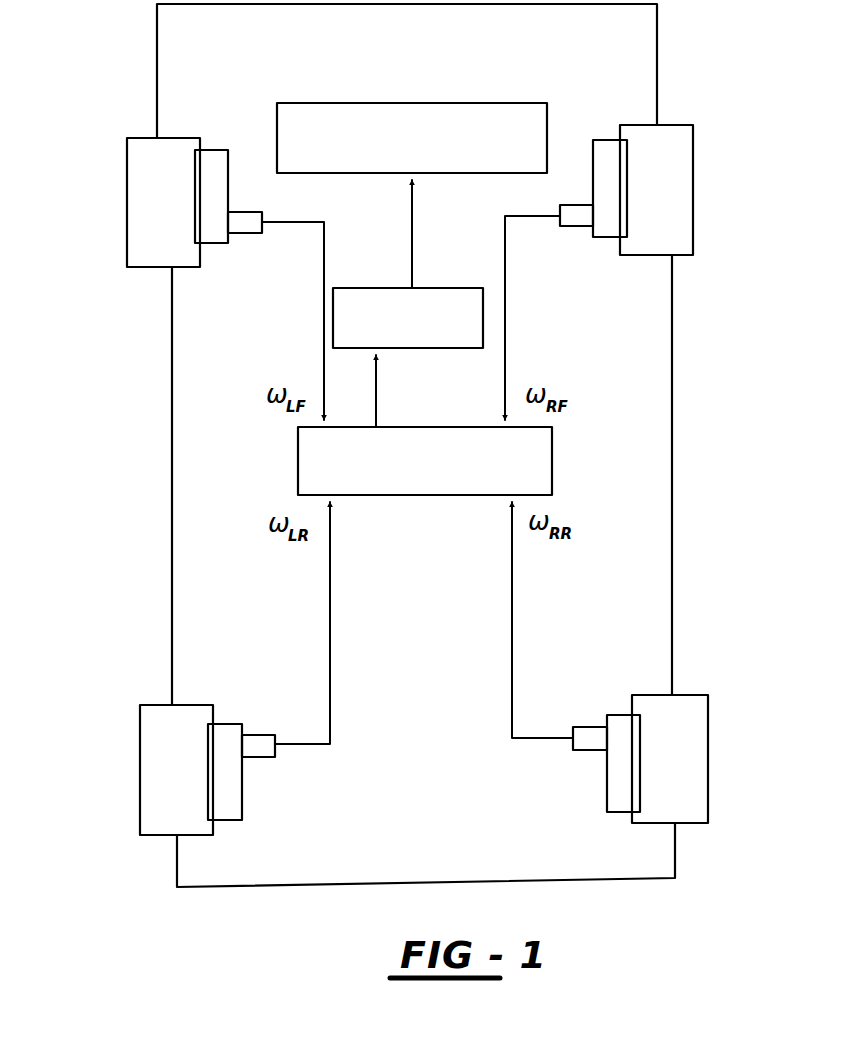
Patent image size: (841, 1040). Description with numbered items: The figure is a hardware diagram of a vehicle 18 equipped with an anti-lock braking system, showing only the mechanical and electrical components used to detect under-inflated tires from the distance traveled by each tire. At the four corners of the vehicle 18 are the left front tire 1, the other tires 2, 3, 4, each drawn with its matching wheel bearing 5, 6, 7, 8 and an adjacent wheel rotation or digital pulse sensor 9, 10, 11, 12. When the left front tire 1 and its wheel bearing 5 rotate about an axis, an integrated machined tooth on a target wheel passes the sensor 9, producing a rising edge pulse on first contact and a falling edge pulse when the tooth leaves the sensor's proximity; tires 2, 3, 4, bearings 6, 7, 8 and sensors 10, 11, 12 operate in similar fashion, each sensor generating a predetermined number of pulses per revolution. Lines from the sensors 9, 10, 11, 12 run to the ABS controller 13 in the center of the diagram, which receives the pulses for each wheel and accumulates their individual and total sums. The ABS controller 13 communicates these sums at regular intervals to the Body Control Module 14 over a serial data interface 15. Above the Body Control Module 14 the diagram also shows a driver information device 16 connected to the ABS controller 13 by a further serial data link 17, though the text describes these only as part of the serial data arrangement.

The left front tire 1 is at (138, 148).
The tire 2 is at (672, 135).
The tire 3 is at (140, 818).
The tire 4 is at (695, 798).
The wheel bearing 5 is at (216, 162).
The wheel bearing 6 is at (610, 140).
The wheel bearing 7 is at (228, 730).
The wheel bearing 8 is at (620, 722).
The wheel rotation sensor 9 is at (246, 228).
The wheel rotation sensor 10 is at (575, 216).
The wheel rotation sensor 11 is at (262, 745).
The wheel rotation sensor 12 is at (587, 742).
The ABS controller 13 is at (440, 487).
The Body Control Module 14 is at (373, 305).
The serial data interface 15 is at (376, 397).
The driver information device 16 is at (425, 108).
The serial data link between ABS controller and driver information device 17 is at (412, 205).
The vehicle 18 is at (134, 628).